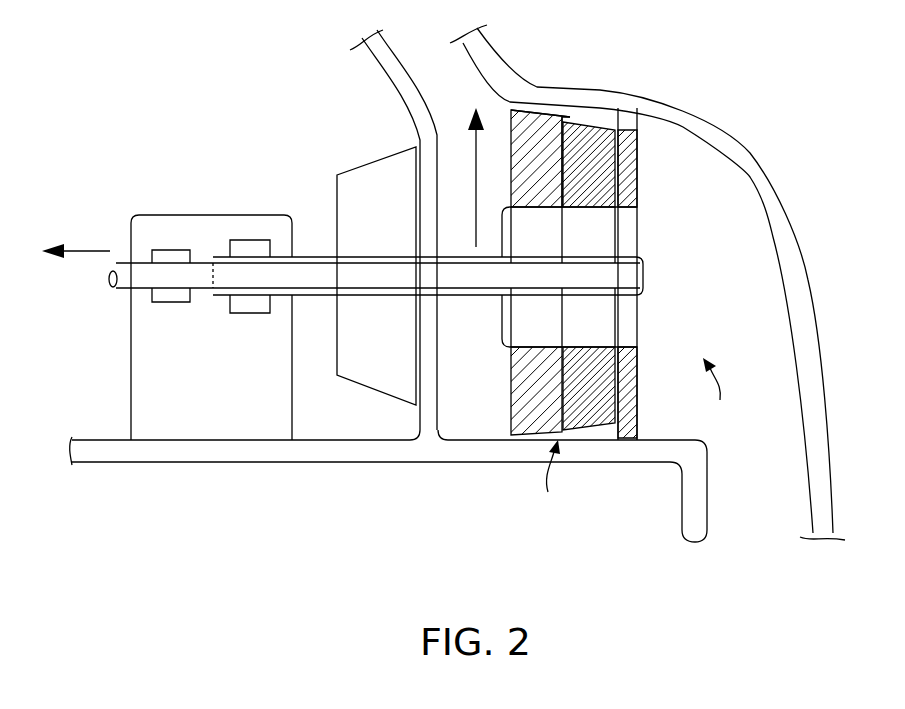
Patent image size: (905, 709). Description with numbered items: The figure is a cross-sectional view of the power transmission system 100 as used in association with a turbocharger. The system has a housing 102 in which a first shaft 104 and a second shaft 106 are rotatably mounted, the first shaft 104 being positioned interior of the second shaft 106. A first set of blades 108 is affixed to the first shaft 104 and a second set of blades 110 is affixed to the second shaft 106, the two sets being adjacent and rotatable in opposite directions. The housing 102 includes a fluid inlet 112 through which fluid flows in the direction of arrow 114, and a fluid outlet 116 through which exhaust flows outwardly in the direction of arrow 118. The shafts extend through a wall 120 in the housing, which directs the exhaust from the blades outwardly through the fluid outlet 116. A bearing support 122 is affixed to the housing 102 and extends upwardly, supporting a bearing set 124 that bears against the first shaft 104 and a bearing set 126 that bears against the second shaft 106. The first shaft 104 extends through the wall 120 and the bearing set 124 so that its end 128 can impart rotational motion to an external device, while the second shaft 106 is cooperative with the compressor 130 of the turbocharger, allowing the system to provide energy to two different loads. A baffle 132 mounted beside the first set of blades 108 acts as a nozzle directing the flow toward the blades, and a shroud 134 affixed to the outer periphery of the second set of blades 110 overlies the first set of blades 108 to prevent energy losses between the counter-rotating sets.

The power transmission system 100 is at (619, 58).
The housing 102 is at (333, 462).
The first shaft 104 is at (313, 270).
The second shaft 106 is at (470, 297).
The first set of blades 108 is at (590, 427).
The second set of blades 110 is at (518, 442).
The fluid inlet 112 is at (747, 490).
The arrow 114 is at (722, 380).
The fluid outlet 116 is at (404, 59).
The arrow 118 is at (475, 160).
The wall 120 is at (435, 398).
The bearing support 122 is at (290, 410).
The bearing set 124 is at (173, 297).
The bearing set 126 is at (245, 303).
The end 128 is at (112, 288).
The compressor 130 is at (365, 177).
The baffle 132 is at (637, 168).
The shroud 134 is at (555, 478).